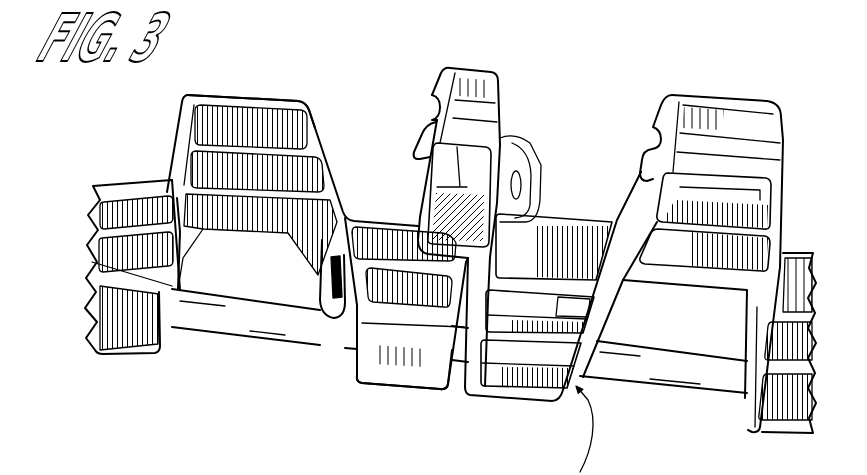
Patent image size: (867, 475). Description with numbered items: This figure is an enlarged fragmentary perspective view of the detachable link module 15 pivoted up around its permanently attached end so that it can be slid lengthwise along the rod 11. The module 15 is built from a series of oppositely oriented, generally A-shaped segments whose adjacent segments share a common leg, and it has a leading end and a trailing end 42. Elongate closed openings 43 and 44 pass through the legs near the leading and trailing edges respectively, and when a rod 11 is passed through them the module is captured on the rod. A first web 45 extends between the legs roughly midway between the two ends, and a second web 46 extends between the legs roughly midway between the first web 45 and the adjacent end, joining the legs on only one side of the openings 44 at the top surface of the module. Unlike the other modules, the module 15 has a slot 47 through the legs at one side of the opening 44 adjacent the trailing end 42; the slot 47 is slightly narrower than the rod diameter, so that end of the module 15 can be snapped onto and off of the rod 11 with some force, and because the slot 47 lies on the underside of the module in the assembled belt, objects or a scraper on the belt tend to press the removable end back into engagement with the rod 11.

The rod 11 is at (233, 337).
The module 15 is at (320, 127).
The trailing end 42 is at (232, 97).
The elongate closed opening 43 is at (333, 292).
The elongate closed opening 44 is at (426, 147).
The first web 45 is at (560, 228).
The second web 46 is at (218, 140).
The slot 47 is at (432, 120).